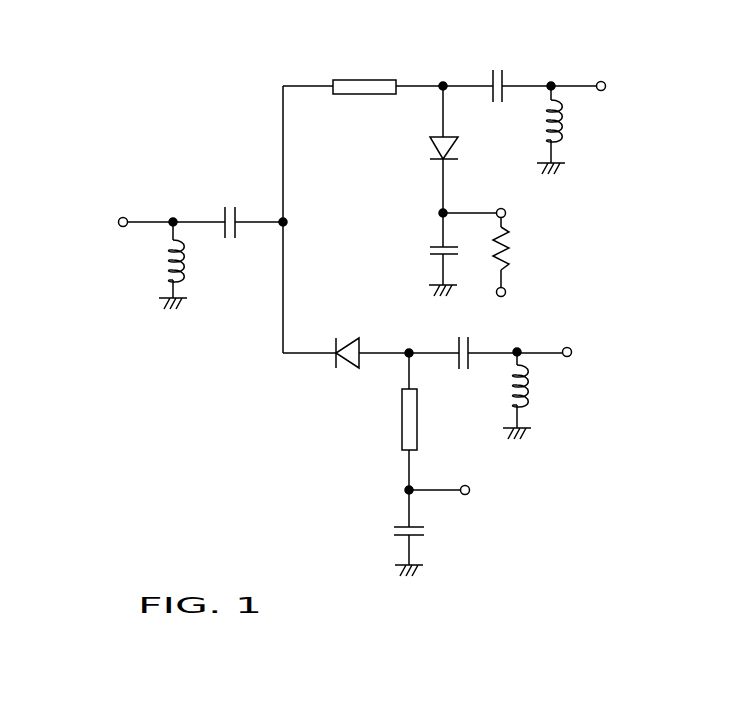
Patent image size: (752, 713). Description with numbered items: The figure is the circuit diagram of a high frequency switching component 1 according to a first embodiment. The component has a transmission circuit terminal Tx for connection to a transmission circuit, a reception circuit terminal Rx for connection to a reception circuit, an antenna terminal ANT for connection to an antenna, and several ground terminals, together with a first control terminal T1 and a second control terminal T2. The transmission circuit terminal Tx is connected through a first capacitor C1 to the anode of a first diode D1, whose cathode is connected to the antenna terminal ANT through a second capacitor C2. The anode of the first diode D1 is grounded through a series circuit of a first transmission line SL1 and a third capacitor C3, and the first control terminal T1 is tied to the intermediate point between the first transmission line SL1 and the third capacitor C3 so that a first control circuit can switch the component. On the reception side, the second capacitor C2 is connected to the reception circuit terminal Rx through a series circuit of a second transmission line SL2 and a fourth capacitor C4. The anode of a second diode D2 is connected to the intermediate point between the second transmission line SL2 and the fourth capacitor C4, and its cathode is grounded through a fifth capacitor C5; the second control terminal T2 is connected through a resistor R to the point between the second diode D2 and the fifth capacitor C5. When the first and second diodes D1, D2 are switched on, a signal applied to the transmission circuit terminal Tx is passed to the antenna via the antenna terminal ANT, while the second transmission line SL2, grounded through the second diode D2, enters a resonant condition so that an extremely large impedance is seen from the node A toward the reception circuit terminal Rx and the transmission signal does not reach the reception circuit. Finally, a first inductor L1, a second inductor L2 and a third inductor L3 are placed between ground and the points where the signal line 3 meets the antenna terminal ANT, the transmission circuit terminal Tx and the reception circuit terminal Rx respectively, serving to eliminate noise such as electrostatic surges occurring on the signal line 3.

The high frequency switching component 1 is at (234, 31).
The signal line 3 is at (353, 216).
The antenna terminal ANT is at (93, 222).
The reception circuit terminal Rx is at (623, 84).
The transmission circuit terminal Tx is at (588, 351).
The node A is at (307, 222).
The first capacitor C1 is at (461, 370).
The second capacitor C2 is at (228, 206).
The third capacitor C3 is at (396, 563).
The fourth capacitor C4 is at (496, 72).
The fifth capacitor C5 is at (431, 284).
The first inductor L1 is at (166, 289).
The second inductor L2 is at (528, 417).
The third inductor L3 is at (563, 151).
The first diode D1 is at (343, 336).
The second diode D2 is at (419, 154).
The first transmission line SL1 is at (381, 419).
The second transmission line SL2 is at (364, 72).
The resistor R is at (521, 248).
The first control terminal T1 is at (483, 494).
The second control terminal T2 is at (526, 257).